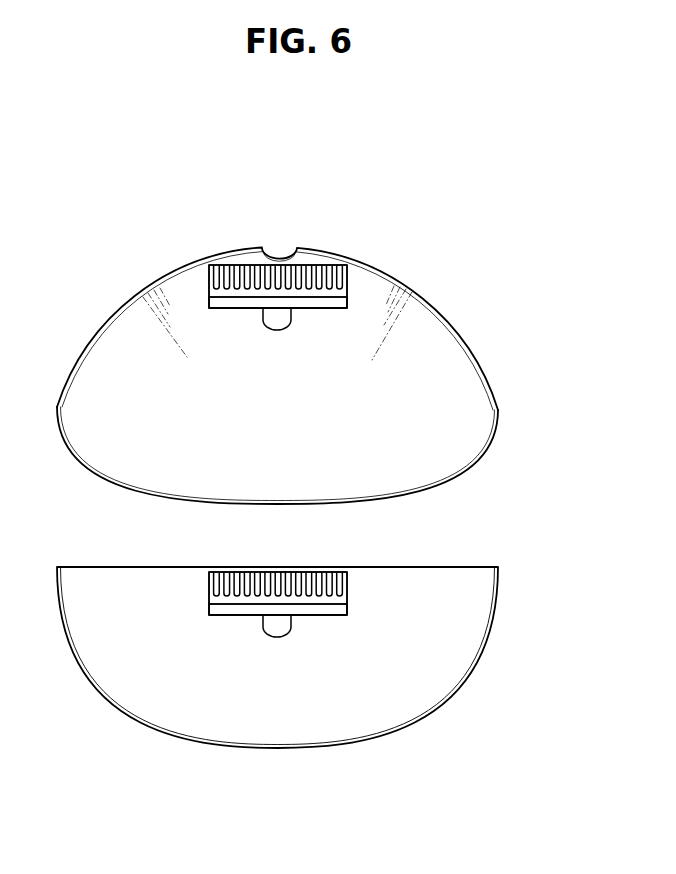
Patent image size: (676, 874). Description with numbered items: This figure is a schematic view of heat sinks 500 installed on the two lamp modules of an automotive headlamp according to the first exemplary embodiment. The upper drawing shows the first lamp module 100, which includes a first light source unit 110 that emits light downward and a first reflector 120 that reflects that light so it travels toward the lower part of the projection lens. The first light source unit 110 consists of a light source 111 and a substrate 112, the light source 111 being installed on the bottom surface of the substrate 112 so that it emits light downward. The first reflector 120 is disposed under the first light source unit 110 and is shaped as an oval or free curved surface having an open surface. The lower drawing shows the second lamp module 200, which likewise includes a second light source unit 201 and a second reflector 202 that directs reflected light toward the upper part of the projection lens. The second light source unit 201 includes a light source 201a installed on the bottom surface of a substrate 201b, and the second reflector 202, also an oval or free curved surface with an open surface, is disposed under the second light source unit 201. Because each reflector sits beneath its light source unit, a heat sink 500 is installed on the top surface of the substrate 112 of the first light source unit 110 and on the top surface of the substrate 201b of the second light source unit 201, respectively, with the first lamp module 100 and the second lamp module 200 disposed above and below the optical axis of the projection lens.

The first lamp module 100 is at (297, 365).
The first light source unit 110 is at (215, 260).
The light source 111 is at (267, 324).
The substrate 112 is at (210, 303).
The first reflector 120 is at (393, 282).
The heat sink 500 is at (349, 278).
The second lamp module 200 is at (283, 683).
The second light source unit 201 is at (232, 707).
The light source 201a is at (274, 628).
The substrate 201b is at (218, 608).
The second reflector 202 is at (352, 738).